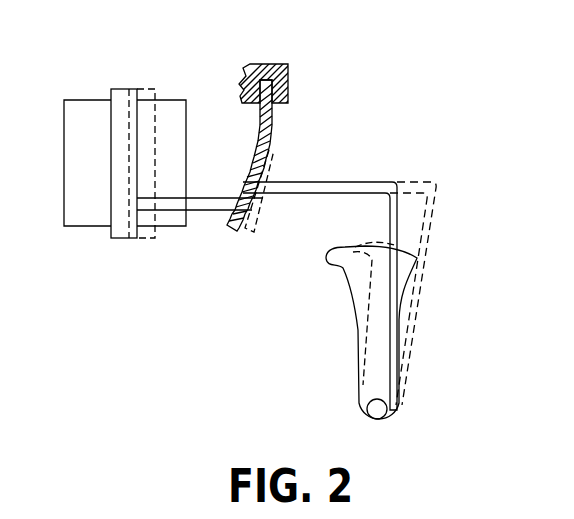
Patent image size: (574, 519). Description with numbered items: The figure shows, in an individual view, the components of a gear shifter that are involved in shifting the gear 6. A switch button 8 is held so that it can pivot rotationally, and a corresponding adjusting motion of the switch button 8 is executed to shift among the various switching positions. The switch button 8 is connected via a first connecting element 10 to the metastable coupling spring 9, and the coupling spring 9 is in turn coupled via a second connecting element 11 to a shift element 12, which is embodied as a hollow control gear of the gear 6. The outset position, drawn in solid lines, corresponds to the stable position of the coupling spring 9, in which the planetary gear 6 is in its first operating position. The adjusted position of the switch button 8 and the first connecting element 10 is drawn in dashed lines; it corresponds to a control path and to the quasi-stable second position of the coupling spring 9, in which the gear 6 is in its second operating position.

The gear 6 is at (85, 110).
The shift element 12 is at (120, 100).
The second connecting element 11 is at (213, 202).
The coupling spring 9 is at (266, 136).
The first connecting element 10 is at (305, 190).
The switch button 8 is at (357, 316).